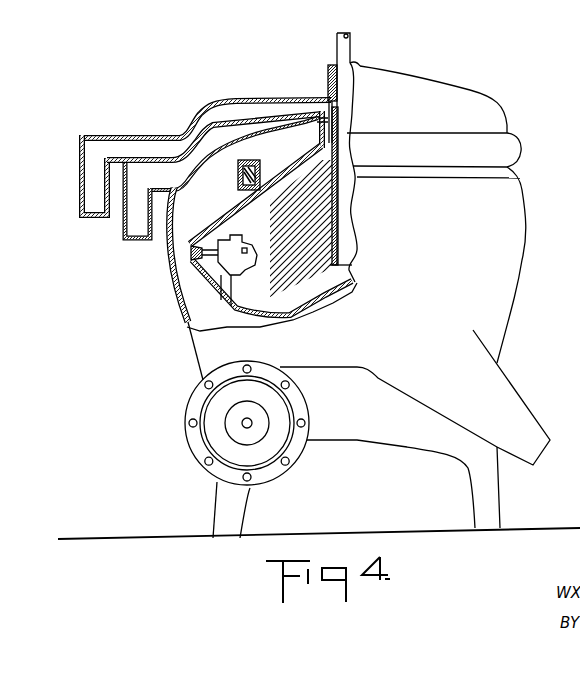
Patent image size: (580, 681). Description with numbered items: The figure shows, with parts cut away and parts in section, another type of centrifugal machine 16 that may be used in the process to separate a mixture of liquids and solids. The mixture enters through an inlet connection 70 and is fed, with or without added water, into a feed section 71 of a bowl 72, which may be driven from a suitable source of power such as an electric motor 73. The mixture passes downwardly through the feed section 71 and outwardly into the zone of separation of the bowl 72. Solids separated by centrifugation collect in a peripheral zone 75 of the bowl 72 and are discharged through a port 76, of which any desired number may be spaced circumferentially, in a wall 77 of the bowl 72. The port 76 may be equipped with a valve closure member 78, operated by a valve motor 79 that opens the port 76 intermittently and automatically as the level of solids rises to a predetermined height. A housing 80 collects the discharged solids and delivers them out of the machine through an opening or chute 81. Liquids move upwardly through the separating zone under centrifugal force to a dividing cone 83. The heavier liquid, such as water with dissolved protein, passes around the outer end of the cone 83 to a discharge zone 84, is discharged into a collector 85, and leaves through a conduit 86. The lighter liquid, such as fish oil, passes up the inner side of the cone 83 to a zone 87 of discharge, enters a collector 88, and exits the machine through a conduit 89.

The centrifugal machine 16 is at (528, 203).
The inlet connection 70 is at (347, 50).
The feed section 71 is at (353, 133).
The bowl 72 is at (227, 313).
The electric motor 73 is at (193, 454).
The peripheral zone 75 is at (212, 273).
The port 76 is at (196, 250).
The wall 77 is at (193, 237).
The valve closure member 78 is at (195, 262).
The valve motor 79 is at (230, 276).
The housing 80 is at (196, 360).
The chute 81 is at (523, 408).
The dividing cone 83 is at (272, 182).
The discharge zone 84 is at (327, 123).
The collector 85 is at (278, 127).
The conduit 86 is at (123, 227).
The zone of discharge 87 is at (328, 100).
The collector 88 is at (262, 112).
The conduit 89 is at (79, 190).